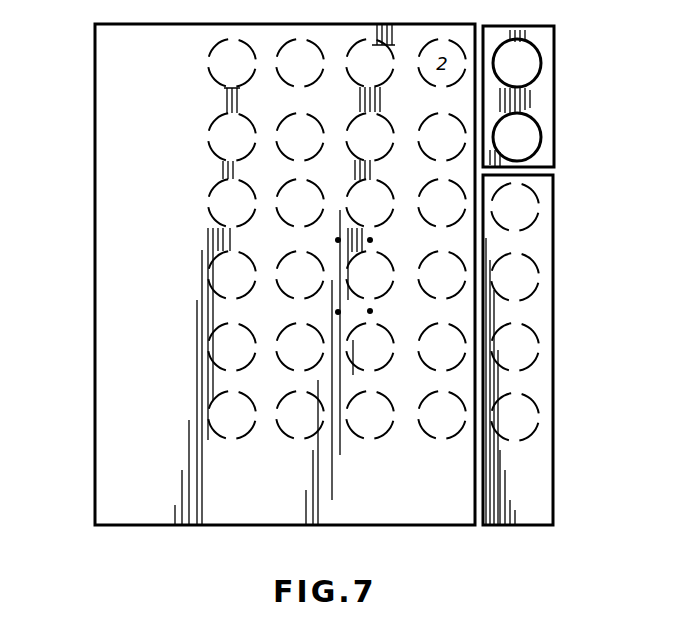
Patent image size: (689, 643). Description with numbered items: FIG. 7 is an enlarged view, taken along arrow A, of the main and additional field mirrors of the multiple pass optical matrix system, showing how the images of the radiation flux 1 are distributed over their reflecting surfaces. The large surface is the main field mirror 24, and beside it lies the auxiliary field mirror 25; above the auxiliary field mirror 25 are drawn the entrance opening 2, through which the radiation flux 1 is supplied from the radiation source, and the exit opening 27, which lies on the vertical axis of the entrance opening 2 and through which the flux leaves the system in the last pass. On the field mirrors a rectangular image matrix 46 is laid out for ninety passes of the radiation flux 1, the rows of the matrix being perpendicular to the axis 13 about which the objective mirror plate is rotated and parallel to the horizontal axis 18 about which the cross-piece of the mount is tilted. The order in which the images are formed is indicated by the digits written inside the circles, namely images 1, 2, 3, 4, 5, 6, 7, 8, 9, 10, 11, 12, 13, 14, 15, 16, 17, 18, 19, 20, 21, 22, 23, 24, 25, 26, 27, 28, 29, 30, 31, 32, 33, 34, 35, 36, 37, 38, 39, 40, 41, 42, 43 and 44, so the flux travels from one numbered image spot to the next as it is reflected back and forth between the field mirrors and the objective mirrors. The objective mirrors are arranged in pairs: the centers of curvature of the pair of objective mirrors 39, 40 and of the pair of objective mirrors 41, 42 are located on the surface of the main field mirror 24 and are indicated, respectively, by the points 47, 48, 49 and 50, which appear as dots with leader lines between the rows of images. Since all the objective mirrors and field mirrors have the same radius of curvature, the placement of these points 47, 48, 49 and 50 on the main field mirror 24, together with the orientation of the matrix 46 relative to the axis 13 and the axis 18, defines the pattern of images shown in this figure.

The main field mirror 24 is at (97, 170).
The auxiliary field mirror 25 is at (536, 350).
The entrance opening 2 is at (535, 63).
The exit opening 27 is at (533, 143).
The rectangular image matrix 46 is at (127, 300).
The point 47 is at (370, 240).
The point 48 is at (338, 240).
The point 49 is at (370, 311).
The point 50 is at (338, 312).
The radiation flux 1 is at (232, 415).
The lid 3 is at (300, 415).
The housing 4 is at (370, 63).
The cell 5 is at (370, 415).
The main objective mirror 6 is at (300, 63).
The plate 7 is at (442, 415).
The mount 8 is at (232, 63).
The main objective mirror 9 is at (515, 417).
The shaped strip 10 is at (232, 203).
The rod 11 is at (442, 415).
The means for rotation of the plate 12 is at (300, 203).
The axis 13 is at (370, 415).
The screw 14 is at (370, 203).
The hand nut 15 is at (300, 415).
The cover 16 is at (442, 203).
The cross-piece 17 is at (232, 415).
The horizontal axis 18 is at (515, 207).
The support roller 19 is at (232, 275).
The means for rotation about the axis 20 is at (442, 203).
The hand nut 21 is at (300, 275).
The additional objective mirror 22 is at (370, 203).
The spring 23 is at (370, 275).
The rectangular image matrix 26 is at (232, 203).
The windows 28 is at (232, 347).
The pin 29 is at (442, 275).
The point 30 is at (300, 347).
The point 31 is at (370, 275).
The point 32 is at (370, 347).
The point 33 is at (300, 275).
The pin 34 is at (442, 347).
The pin 35 is at (232, 275).
The pin 36 is at (515, 347).
The pin 37 is at (232, 137).
The pin 38 is at (442, 347).
The objective mirror 39 is at (300, 137).
The objective mirror 40 is at (370, 347).
The objective mirror 41 is at (370, 137).
The objective mirror 42 is at (300, 347).
The pin 43 is at (442, 137).
The pin 44 is at (232, 347).